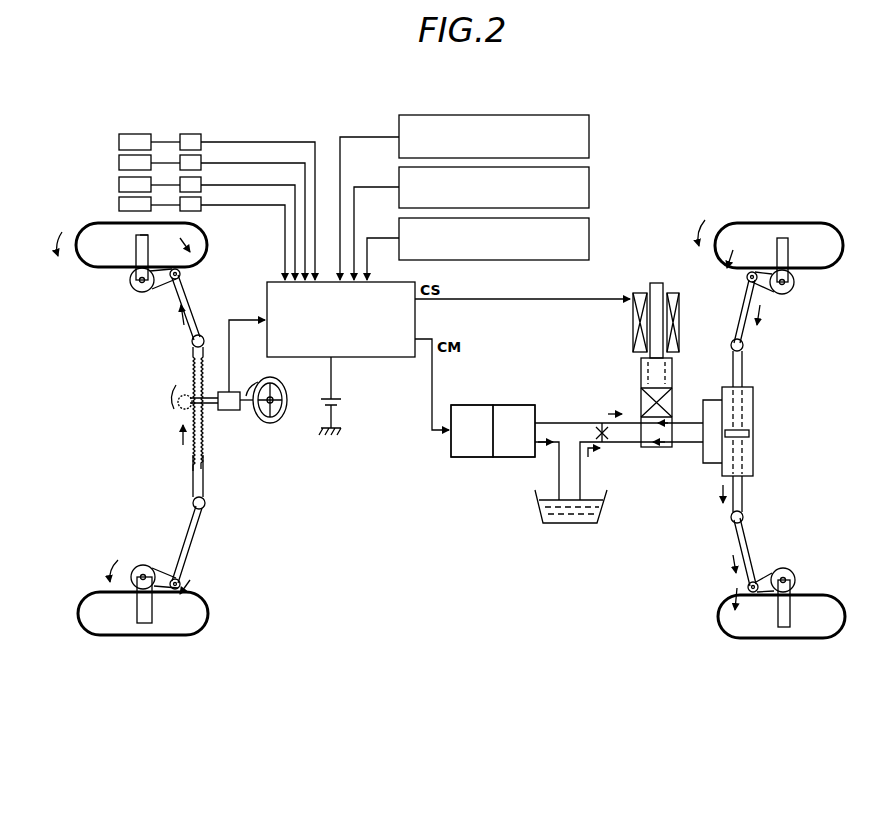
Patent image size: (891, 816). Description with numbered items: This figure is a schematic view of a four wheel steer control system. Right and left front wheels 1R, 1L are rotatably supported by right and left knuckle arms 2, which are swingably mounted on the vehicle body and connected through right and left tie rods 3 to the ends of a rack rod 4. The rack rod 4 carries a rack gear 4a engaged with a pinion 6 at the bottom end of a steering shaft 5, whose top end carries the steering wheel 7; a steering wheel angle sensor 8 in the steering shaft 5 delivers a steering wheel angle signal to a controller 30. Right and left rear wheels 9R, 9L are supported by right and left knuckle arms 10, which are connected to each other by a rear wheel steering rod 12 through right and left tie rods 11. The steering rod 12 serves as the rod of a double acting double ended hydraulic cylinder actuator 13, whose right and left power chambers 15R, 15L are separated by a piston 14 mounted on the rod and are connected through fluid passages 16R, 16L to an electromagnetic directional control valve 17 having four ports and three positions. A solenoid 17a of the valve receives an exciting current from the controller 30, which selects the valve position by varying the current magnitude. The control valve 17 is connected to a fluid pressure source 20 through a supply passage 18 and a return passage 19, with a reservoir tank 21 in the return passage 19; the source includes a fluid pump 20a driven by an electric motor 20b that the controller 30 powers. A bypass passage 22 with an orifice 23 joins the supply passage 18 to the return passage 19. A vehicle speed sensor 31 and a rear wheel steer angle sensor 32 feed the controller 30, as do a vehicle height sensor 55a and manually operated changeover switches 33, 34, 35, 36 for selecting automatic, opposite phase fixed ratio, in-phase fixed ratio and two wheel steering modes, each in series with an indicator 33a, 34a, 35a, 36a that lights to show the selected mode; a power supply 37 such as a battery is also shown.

The right front wheel 1R is at (93, 262).
The left front wheel 1L is at (210, 615).
The knuckle arm 2 is at (137, 290).
The tie rod 3 is at (188, 297).
The rack rod 4 is at (193, 479).
The rack gear 4a is at (193, 379).
The steering shaft 5 is at (215, 412).
The pinion 6 is at (180, 410).
The steering wheel 7 is at (275, 424).
The steering wheel angle sensor 8 is at (230, 412).
The right rear wheel 9R is at (790, 225).
The left rear wheel 9L is at (845, 616).
The knuckle arm 10 is at (794, 290).
The tie rod 11 is at (740, 314).
The rear wheel steering rod 12 is at (745, 363).
The hydraulic cylinder actuator 13 is at (755, 457).
The piston 14 is at (750, 436).
The right power chamber 15R is at (745, 398).
The left power chamber 15L is at (745, 473).
The fluid passage 16R is at (708, 400).
The fluid passage 16L is at (707, 463).
The electromagnetic directional control valve 17 is at (636, 378).
The solenoid 17a is at (632, 323).
The supply passage 18 is at (563, 421).
The return passage 19 is at (628, 443).
The fluid pressure source 20 is at (478, 460).
The fluid pump 20a is at (514, 405).
The electric motor 20b is at (470, 405).
The reservoir tank 21 is at (569, 524).
The bypass passage 22 is at (602, 420).
The orifice 23 is at (605, 440).
The controller 30 is at (417, 325).
The vehicle speed sensor 31 is at (591, 190).
The rear wheel steer angle sensor 32 is at (591, 238).
The changeover switch 33 is at (119, 140).
The changeover switch 34 is at (119, 162).
The changeover switch 35 is at (119, 184).
The changeover switch 36 is at (119, 205).
The indicator 33a is at (190, 134).
The indicator 34a is at (200, 154).
The indicator 35a is at (203, 188).
The indicator 36a is at (202, 208).
The power supply 37 is at (345, 402).
The height sensor 55a is at (591, 136).